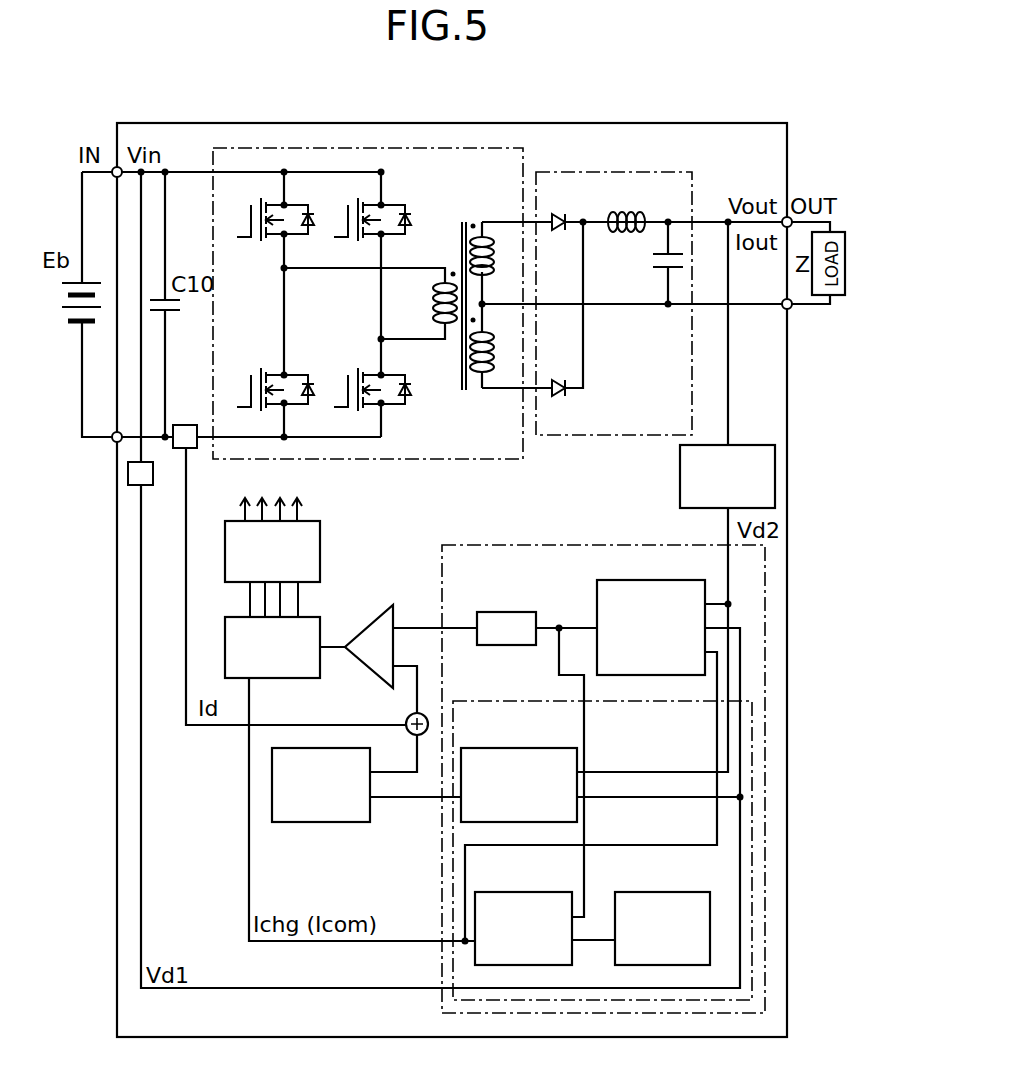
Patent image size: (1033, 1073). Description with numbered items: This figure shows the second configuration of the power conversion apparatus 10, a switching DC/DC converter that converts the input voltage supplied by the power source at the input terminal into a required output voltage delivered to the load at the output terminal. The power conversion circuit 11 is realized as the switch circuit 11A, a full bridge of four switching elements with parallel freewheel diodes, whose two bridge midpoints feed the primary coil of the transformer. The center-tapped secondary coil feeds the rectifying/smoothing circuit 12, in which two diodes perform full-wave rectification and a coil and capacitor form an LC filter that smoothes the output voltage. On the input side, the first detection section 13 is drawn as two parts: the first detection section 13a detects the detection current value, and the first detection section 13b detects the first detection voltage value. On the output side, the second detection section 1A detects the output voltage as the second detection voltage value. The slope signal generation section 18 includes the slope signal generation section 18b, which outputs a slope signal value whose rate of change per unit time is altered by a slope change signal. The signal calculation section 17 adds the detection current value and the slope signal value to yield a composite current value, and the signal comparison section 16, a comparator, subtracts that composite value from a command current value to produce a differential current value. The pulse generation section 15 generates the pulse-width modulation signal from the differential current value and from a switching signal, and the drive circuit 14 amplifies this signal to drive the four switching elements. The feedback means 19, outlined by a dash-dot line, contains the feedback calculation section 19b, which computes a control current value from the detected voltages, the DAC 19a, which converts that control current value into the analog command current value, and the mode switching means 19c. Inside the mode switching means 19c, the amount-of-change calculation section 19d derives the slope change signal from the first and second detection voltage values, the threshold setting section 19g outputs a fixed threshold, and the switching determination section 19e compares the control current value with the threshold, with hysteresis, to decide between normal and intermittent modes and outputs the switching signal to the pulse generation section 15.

The power conversion apparatus 10 is at (380, 123).
The power conversion circuit 11 is at (358, 273).
The switch circuit 11A is at (340, 148).
The rectifying/smoothing circuit 12 is at (692, 205).
The first detection section 13 is at (232, 541).
The first detection section 13a is at (185, 425).
The first detection section 13b is at (128, 475).
The drive circuit 14 is at (225, 558).
The pulse generation section 15 is at (225, 655).
The signal comparison section 16 is at (367, 625).
The signal calculation section 17 is at (408, 716).
The slope signal generation section 18 is at (366, 806).
The slope signal generation section 18b is at (305, 822).
The feedback means 19 is at (560, 545).
The DAC 19a is at (505, 612).
The feedback calculation section 19b is at (630, 580).
The mode switching means 19c is at (483, 701).
The amount-of-change calculation section 19d is at (503, 748).
The switching determination section 19e is at (503, 892).
The threshold setting section 19g is at (645, 892).
The second detection section 1A is at (680, 480).